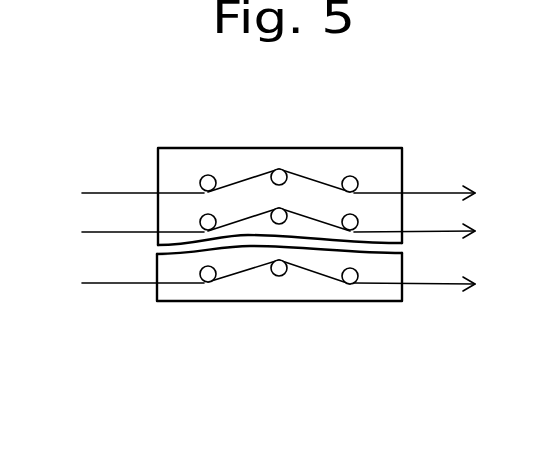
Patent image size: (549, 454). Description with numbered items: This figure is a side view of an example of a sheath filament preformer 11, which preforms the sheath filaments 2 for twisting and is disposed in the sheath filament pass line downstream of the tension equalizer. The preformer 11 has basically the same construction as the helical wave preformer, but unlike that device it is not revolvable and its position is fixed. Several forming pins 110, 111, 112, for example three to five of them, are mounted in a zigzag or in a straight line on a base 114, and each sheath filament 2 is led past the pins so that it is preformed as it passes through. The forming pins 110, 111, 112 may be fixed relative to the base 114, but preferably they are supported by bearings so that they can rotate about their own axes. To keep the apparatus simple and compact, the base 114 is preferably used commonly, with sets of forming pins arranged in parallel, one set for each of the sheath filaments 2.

The sheath filament 2 is at (108, 192).
The preformer 11 is at (200, 145).
The forming pin 110 is at (209, 214).
The forming pin 111 is at (280, 208).
The forming pin 112 is at (351, 214).
The base 114 is at (393, 178).